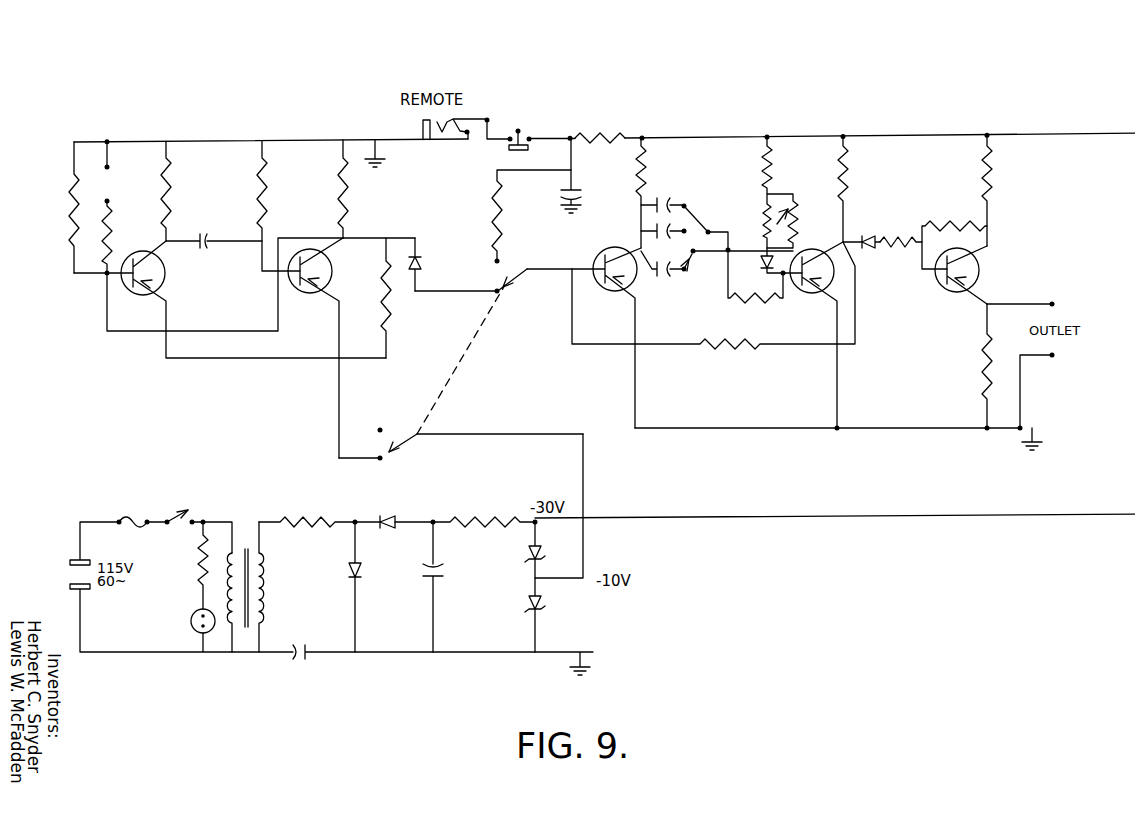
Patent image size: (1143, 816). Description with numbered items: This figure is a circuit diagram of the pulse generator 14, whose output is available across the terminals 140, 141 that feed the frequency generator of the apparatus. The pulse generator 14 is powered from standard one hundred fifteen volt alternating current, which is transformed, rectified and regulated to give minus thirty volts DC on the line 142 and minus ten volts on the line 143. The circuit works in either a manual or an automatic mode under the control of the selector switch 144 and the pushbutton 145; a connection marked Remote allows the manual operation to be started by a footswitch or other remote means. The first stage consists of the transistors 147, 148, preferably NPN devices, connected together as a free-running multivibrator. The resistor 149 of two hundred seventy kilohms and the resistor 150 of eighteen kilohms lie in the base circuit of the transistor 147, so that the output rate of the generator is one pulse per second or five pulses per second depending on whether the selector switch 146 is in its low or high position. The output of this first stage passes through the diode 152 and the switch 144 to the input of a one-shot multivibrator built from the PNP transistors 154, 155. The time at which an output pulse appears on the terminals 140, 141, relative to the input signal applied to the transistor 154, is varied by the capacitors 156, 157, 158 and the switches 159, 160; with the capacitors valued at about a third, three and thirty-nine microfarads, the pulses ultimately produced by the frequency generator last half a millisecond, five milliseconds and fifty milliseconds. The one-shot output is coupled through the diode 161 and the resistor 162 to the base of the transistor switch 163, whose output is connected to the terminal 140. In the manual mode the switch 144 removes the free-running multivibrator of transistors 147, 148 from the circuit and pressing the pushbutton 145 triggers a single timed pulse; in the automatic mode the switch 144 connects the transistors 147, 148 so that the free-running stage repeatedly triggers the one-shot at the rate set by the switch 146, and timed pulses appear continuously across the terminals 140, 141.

The pulse generator 14 is at (1082, 98).
The output terminal 140 is at (1029, 293).
The output terminal 141 is at (1032, 350).
The minus 30 volt line 142 is at (852, 510).
The minus 10 volt line 143 is at (575, 466).
The selector switch 144 is at (515, 266).
The pushbutton 145 is at (519, 126).
The selector switch 146 is at (112, 177).
The transistor 147 is at (162, 270).
The transistor 148 is at (301, 285).
The resistor 149 is at (66, 193).
The resistor 150 is at (94, 241).
The diode 152 is at (416, 255).
The transistor 154 is at (597, 284).
The transistor 155 is at (807, 283).
The capacitor 156 is at (649, 270).
The capacitor 157 is at (645, 217).
The capacitor 158 is at (663, 189).
The switch 159 is at (685, 243).
The switch 160 is at (694, 205).
The diode 161 is at (855, 228).
The resistor 162 is at (889, 243).
The transistor switch 163 is at (944, 285).